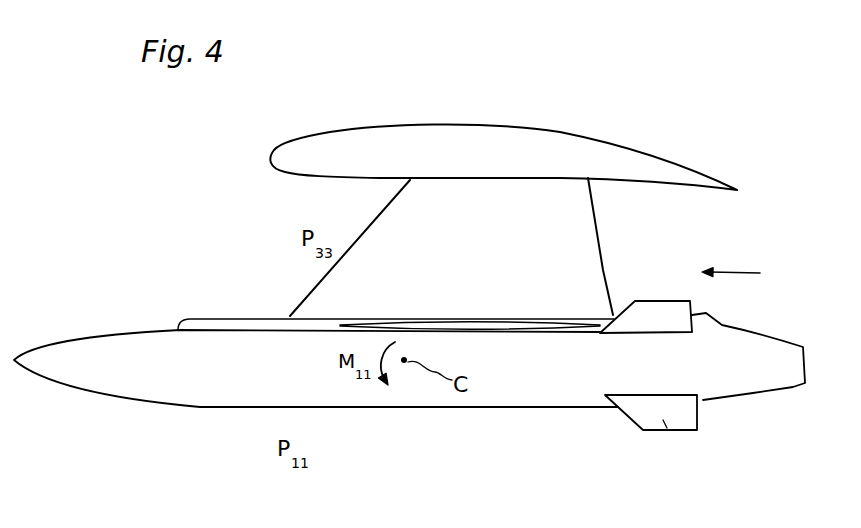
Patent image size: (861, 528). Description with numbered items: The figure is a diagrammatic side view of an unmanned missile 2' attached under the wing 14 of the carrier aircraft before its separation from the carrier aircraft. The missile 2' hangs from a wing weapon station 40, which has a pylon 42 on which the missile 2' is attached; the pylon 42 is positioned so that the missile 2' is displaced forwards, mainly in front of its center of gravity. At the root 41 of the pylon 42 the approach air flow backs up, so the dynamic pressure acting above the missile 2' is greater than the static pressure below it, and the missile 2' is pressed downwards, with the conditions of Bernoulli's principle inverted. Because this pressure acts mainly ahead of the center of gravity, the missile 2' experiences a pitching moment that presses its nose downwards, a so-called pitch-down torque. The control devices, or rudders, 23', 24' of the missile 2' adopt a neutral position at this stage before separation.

The wing 14 is at (530, 122).
The root of pylon 41 is at (288, 296).
The pylon 42 is at (585, 252).
The wing weapon station 40 is at (750, 276).
The control device 23' is at (679, 310).
The control device 24' is at (651, 455).
The unmanned missile 2' is at (409, 413).